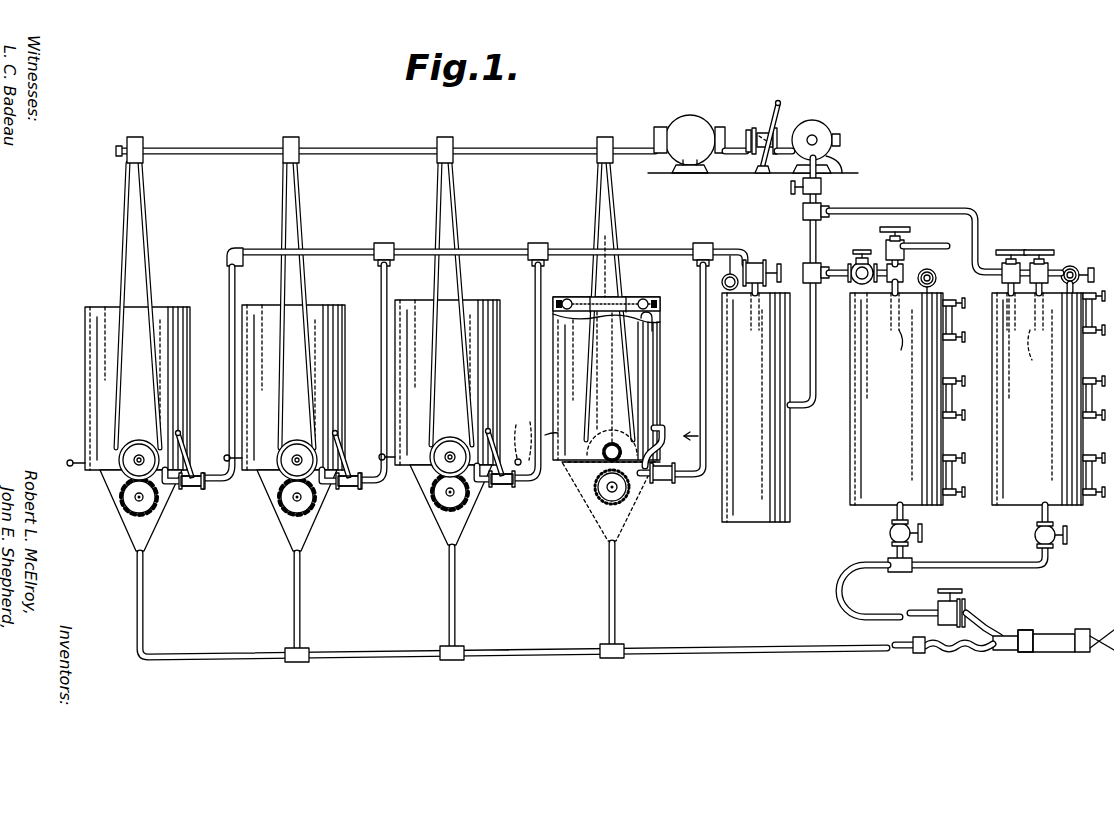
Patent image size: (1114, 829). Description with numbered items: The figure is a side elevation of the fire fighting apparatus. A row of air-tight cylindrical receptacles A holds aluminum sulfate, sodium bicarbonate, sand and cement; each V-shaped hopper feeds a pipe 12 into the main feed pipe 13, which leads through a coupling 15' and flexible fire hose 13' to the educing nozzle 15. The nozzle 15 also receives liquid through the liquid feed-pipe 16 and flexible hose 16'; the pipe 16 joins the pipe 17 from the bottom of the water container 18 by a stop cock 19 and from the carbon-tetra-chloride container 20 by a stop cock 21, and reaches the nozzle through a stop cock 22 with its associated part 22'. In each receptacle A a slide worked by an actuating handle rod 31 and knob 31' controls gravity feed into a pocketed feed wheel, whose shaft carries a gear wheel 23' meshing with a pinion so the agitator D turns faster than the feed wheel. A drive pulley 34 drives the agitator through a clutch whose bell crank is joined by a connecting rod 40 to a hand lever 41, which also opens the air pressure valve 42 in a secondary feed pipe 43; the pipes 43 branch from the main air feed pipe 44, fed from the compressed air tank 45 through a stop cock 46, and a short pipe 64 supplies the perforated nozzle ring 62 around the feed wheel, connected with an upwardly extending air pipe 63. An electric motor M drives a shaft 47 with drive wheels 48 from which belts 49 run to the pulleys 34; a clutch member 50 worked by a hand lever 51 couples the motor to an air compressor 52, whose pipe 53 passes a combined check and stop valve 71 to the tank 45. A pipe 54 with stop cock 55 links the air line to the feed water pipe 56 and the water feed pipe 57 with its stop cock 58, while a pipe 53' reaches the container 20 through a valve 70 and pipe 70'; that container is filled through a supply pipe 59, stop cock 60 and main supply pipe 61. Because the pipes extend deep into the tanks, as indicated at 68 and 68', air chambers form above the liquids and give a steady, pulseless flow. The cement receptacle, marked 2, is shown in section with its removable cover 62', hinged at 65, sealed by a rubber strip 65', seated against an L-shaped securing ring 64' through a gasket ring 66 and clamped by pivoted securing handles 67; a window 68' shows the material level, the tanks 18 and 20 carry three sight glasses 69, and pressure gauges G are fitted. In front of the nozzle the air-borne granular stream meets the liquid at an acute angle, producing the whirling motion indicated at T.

The cement feed pipe and agitator 2 is at (622, 578).
The pipe 12 is at (300, 586).
The main feed pipe 13 is at (513, 605).
The flexible pipe or fire hose 13' is at (959, 659).
The educing nozzle 15 is at (1020, 620).
The coupling 15' is at (910, 660).
The liquid feed-pipe 16 is at (869, 591).
The flexible pipe or fire hose 16' is at (995, 622).
The pipe 17 is at (978, 562).
The water container 18 is at (896, 399).
The stop cock 19 is at (925, 535).
The carbon-tetra-chloride container 20 is at (1037, 399).
The stop cock 21 is at (1052, 543).
The stop cock 22 is at (957, 599).
The valve handwheel 22' is at (971, 600).
The gear wheel or pinion 23' is at (310, 516).
The actuating handle rod 31 is at (304, 469).
The knob or actuating handle 31' is at (523, 434).
The drive pulley 34 is at (160, 472).
The connecting rod 40 is at (349, 487).
The actuating hand lever 41 is at (350, 470).
The air pressure valve 42 is at (360, 488).
The secondary feed pipe 43 is at (230, 360).
The main air feed pipe 44 is at (645, 250).
The compressed air reservoir or tank 45 is at (756, 407).
The stop cock 46 is at (765, 268).
The drive shaft 47 is at (228, 148).
The drive wheels 48 is at (144, 148).
The drive belts 49 is at (297, 215).
The clutch member 50 is at (754, 128).
The hand lever 51 is at (780, 118).
The air compressor 52 is at (828, 128).
The pipe 53 is at (820, 302).
The pipe 53' is at (915, 226).
The pipe 54 is at (858, 260).
The stop cock 55 is at (855, 282).
The feed water pipe 56 is at (934, 267).
The water feed pipe 57 is at (933, 233).
The stop cock 58 is at (906, 244).
The supply pipe 59 is at (1038, 250).
The stop cock 60 is at (1068, 264).
The main supply pipe 61 is at (1089, 262).
The annular air feed pipe or nozzle ring 62 is at (636, 498).
The removable cover 62' is at (586, 259).
The air pipe 63 is at (643, 322).
The short pipe 64 is at (673, 468).
The securing ring 64' is at (585, 287).
The hinge 65 is at (608, 371).
The strip of soft rubber 65' is at (639, 286).
The washer or gasket ring 66 is at (662, 304).
The pivoted securing handles 67 is at (607, 291).
The lower end of feed water pipe 68 is at (899, 322).
The window 68' is at (785, 392).
The sight glasses 69 is at (1028, 385).
The valve 70 is at (1010, 253).
The pipe 70' is at (1041, 345).
The valve 71 is at (791, 188).
The receptacles A is at (339, 404).
The rotating mechanical agitator D is at (662, 432).
The pressure gauges G is at (1084, 226).
The electric motor M is at (753, 144).
The twisting, whirling and crossing motion T is at (1082, 628).